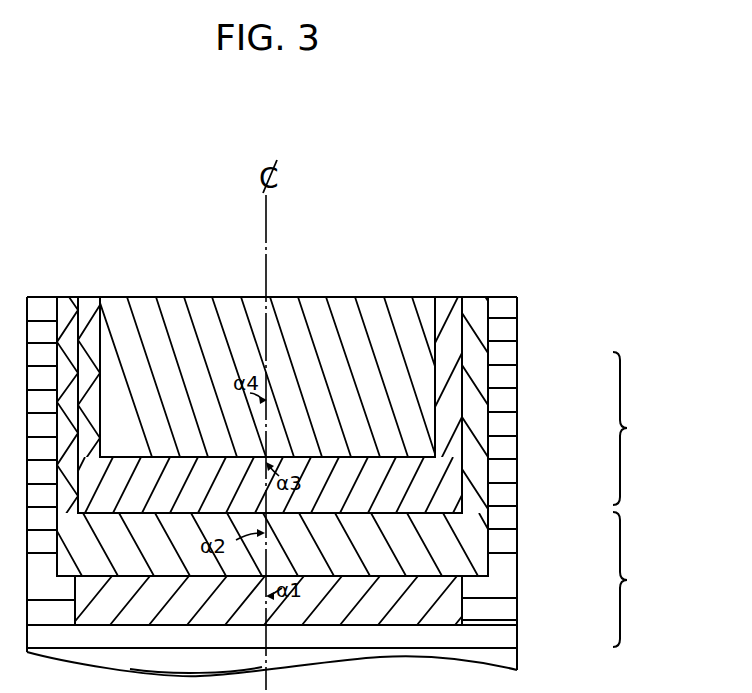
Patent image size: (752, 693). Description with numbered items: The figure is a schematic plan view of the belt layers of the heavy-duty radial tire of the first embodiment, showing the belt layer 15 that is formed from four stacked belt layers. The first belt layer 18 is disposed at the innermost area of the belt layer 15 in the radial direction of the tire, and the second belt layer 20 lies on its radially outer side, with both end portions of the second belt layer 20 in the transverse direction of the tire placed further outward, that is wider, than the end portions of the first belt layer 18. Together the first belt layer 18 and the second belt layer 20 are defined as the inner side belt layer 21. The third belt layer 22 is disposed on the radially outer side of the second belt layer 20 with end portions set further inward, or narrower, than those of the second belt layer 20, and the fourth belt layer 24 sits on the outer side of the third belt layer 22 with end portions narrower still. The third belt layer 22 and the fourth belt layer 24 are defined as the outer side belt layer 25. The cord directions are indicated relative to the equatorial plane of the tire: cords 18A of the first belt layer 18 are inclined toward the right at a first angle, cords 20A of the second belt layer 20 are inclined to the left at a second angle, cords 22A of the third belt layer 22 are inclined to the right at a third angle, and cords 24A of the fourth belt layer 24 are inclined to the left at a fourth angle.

The belt layer 15 is at (105, 289).
The first belt layer 18 is at (467, 580).
The cords of the first belt layer 18A is at (447, 613).
The second belt layer 20 is at (496, 513).
The cords of the second belt layer 20A is at (470, 532).
The inner side belt layer 21 is at (639, 579).
The third belt layer 22 is at (468, 454).
The cords of the third belt layer 22A is at (469, 480).
The fourth belt layer 24 is at (441, 386).
The cords of the fourth belt layer 24A is at (432, 418).
The outer side belt layer 25 is at (639, 428).